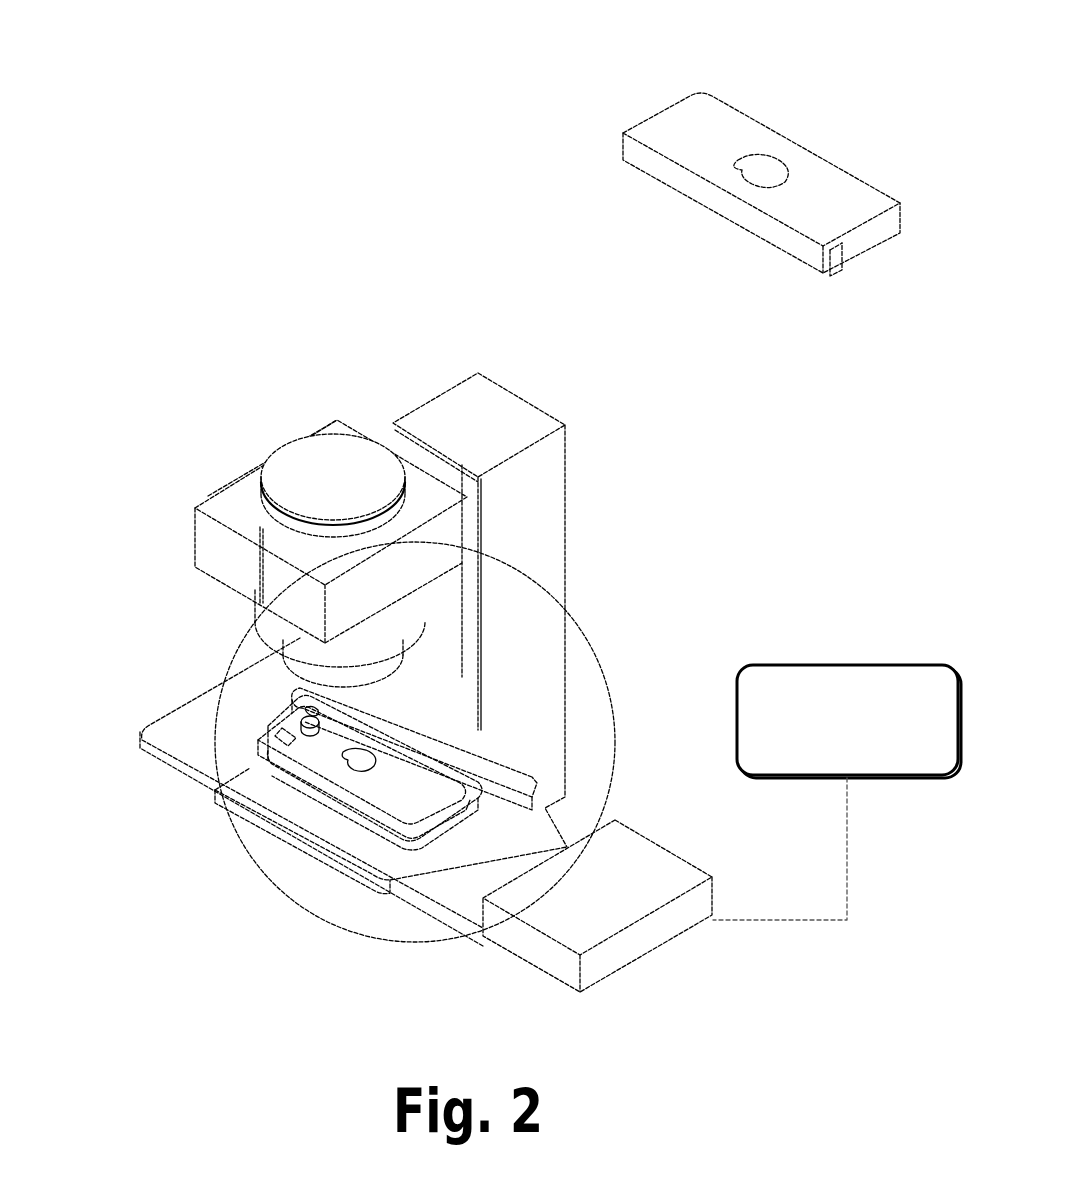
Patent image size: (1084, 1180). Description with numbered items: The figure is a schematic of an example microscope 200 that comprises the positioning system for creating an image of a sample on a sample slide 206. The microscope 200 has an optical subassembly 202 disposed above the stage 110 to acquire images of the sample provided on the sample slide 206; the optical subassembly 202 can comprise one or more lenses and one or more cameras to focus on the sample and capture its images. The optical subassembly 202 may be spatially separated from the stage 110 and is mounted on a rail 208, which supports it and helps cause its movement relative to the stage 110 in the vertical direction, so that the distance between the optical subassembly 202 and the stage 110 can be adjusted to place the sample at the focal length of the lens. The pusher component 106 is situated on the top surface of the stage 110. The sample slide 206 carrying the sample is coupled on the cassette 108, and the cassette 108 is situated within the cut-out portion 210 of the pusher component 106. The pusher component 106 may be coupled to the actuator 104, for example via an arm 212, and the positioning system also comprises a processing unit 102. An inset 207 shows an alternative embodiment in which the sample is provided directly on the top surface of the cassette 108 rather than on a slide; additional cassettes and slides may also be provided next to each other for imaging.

The microscope 200 is at (415, 633).
The optical subassembly 202 is at (262, 580).
The sample slide 206 is at (402, 802).
The inset 207 is at (527, 423).
The rail 208 is at (522, 528).
The cut-out portion 210 is at (468, 802).
The arm 212 is at (503, 868).
The pusher component 106 is at (457, 765).
The cassette 108 is at (514, 444).
The stage 110 is at (165, 730).
The actuator 104 is at (620, 922).
The processing unit 102 is at (837, 792).